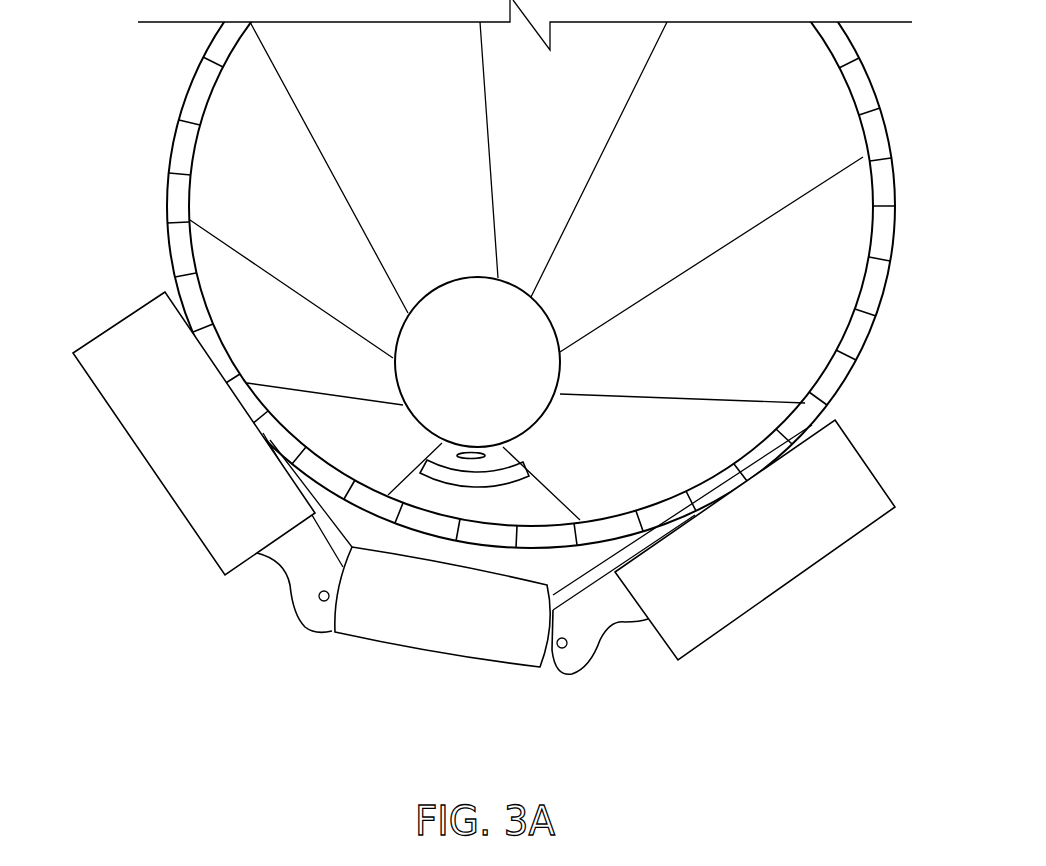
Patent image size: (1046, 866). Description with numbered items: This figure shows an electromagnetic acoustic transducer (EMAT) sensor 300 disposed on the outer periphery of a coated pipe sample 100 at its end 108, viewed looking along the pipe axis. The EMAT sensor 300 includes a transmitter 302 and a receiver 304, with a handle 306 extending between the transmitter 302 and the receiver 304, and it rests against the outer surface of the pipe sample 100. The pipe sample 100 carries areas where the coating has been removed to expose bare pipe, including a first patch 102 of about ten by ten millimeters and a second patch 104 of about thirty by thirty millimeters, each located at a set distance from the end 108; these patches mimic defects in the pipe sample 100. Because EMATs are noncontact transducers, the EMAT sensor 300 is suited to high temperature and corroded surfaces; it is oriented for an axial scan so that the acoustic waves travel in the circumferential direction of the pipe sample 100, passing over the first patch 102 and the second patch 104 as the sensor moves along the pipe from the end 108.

The pipe sample 100 is at (501, 274).
The first patch 102 is at (483, 478).
The second patch 104 is at (462, 458).
The end 108 is at (857, 335).
The electromagnetic acoustic transducer (EMAT) sensor 300 is at (484, 517).
The transmitter 302 is at (182, 480).
The receiver 304 is at (785, 555).
The handle 306 is at (524, 645).